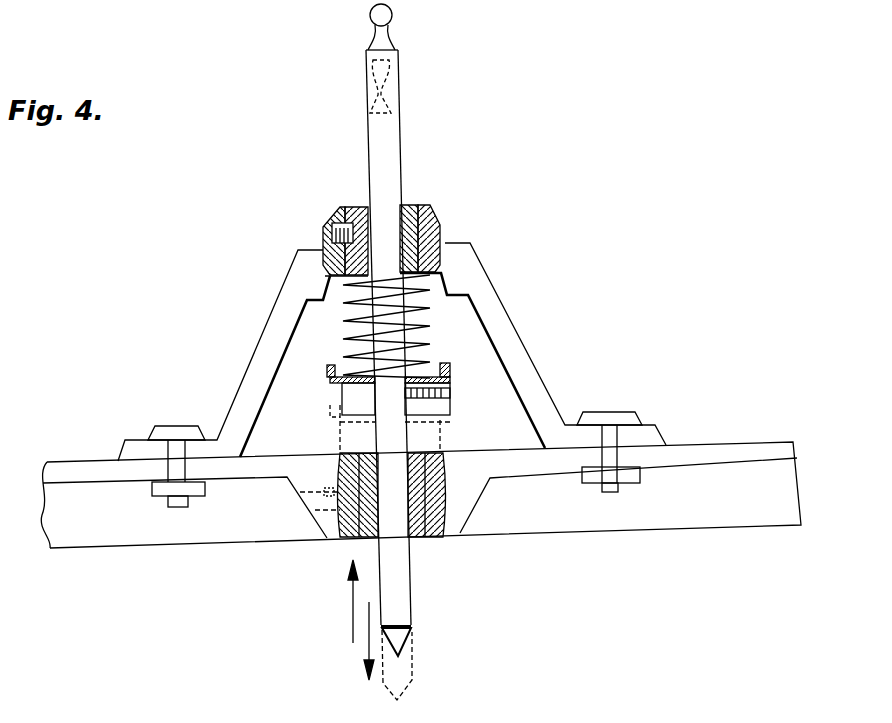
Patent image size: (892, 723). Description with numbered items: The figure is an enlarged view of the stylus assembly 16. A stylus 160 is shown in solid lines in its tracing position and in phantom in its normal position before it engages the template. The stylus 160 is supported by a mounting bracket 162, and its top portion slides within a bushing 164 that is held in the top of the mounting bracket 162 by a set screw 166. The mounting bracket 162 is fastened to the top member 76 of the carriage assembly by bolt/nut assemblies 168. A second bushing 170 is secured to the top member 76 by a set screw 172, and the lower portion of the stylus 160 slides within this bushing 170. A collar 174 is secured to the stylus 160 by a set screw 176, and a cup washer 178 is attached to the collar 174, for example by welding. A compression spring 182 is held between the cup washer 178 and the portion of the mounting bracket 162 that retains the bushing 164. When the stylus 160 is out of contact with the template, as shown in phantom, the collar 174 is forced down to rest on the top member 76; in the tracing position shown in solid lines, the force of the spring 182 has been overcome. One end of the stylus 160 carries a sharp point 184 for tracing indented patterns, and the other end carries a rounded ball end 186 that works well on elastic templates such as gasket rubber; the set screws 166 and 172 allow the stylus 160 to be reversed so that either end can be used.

The stylus assembly 16 is at (520, 258).
The top member 76 is at (768, 424).
The stylus 160 is at (399, 152).
The mounting bracket 162 is at (520, 333).
The bushing 164 is at (415, 204).
The set screw 166 is at (284, 220).
The bolt/nut assemblies 168 is at (182, 413).
The bushing 170 is at (417, 538).
The set screw 172 is at (333, 520).
The collar 174 is at (330, 398).
The set screw 176 is at (427, 398).
The cup washer 178 is at (330, 377).
The compression spring 182 is at (372, 316).
The sharp point 184 is at (412, 648).
The rounded ball end 186 is at (374, 18).